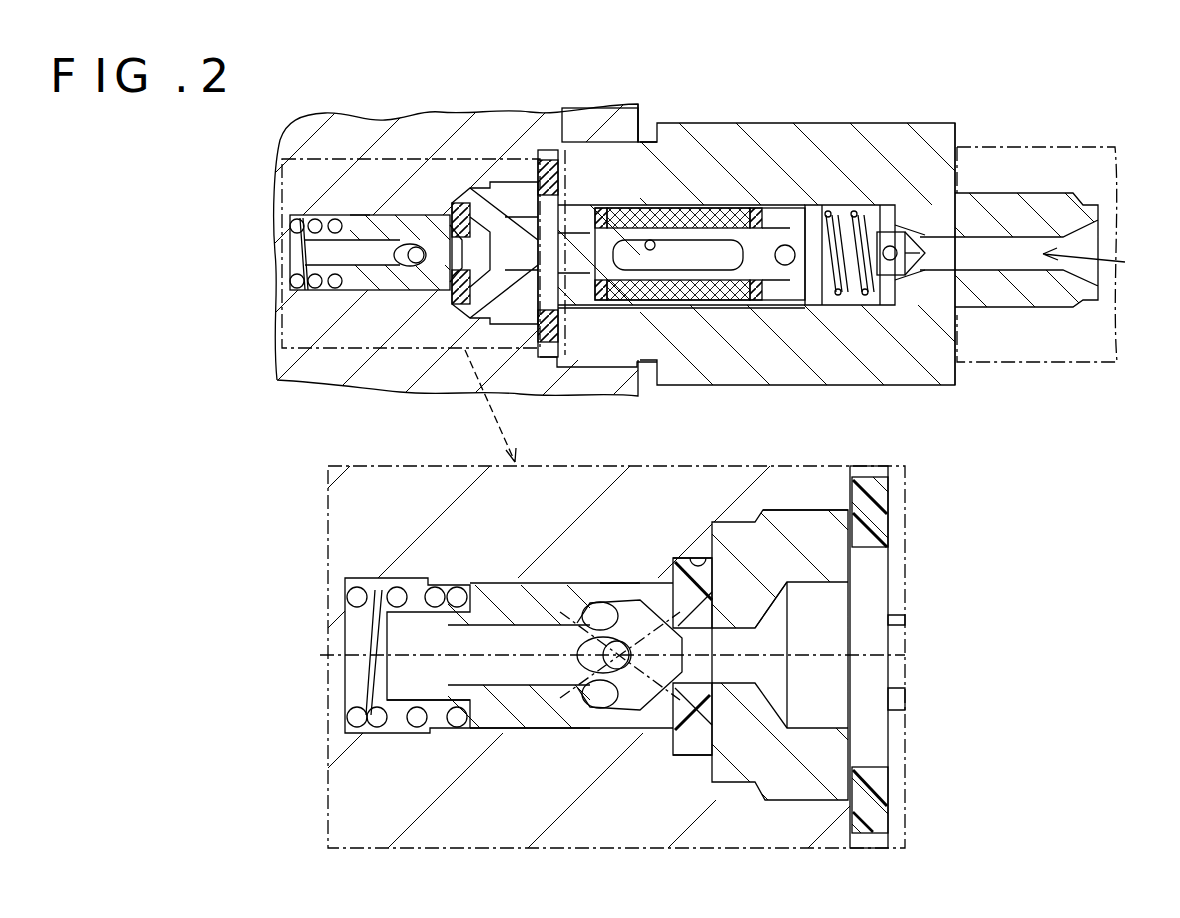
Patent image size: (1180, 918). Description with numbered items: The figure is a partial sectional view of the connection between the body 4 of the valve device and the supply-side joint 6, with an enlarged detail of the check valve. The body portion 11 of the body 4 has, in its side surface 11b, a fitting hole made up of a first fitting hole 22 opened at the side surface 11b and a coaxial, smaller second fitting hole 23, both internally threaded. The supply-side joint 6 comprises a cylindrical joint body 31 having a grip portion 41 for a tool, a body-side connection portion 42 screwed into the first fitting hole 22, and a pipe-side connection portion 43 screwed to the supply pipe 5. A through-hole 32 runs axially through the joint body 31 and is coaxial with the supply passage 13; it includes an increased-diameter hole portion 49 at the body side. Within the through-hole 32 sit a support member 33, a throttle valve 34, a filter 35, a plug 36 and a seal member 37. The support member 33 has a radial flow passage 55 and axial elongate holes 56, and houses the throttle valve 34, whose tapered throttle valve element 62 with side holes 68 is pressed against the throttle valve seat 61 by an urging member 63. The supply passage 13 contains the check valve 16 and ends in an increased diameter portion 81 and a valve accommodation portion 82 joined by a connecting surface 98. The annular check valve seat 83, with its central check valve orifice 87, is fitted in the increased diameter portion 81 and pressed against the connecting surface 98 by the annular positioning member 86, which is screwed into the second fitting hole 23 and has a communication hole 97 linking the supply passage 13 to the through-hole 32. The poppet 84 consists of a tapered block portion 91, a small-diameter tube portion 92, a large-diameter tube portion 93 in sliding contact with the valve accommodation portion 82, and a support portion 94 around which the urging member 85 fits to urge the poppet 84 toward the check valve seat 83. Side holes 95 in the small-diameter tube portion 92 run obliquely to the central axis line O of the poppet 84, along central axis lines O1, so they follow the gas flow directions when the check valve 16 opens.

The body portion 11 is at (415, 130).
The body 4 is at (456, 250).
The side surface 11b is at (640, 108).
The first fitting hole 22 is at (600, 130).
The body-side connection portion 42 is at (560, 145).
The second fitting hole 23 is at (505, 185).
The grip portion 41 is at (818, 124).
The joint body 31 is at (940, 122).
The pipe-side connection portion 43 is at (1022, 210).
The through-hole 32 is at (1102, 263).
The supply pipe 5 is at (1040, 372).
The supply-side joint 6 is at (1072, 84).
The poppet 84 is at (383, 292).
The urging member 85 is at (305, 292).
The supply passage 13 is at (285, 230).
The check valve 16 is at (361, 196).
The positioning member 86 is at (470, 310).
The plug 36 is at (580, 310).
The seal member 37 is at (545, 358).
The increased-diameter hole portion 49 is at (875, 828).
The filter 35 is at (690, 302).
The elongate holes 56 is at (646, 230).
The flow passage 55 is at (787, 242).
The support member 33 is at (815, 305).
The throttle valve 34 is at (848, 225).
The urging member 63 is at (858, 300).
The throttle valve seat 61 is at (925, 248).
The side holes 68 is at (908, 235).
The throttle valve element 62 is at (915, 272).
The increased diameter portion 81 is at (705, 555).
The check valve seat 83 is at (677, 560).
The valve accommodation portion 82 is at (625, 583).
The check valve orifice 87 is at (760, 636).
The communication hole 97 is at (770, 676).
The block portion 91 is at (700, 698).
The small-diameter tube portion 92 is at (695, 725).
The connecting surface 98 is at (690, 756).
The support portion 94 is at (437, 728).
The large-diameter tube portion 93 is at (530, 730).
The side holes 95 is at (593, 600).
The central axis line O is at (420, 650).
The central axis lines O1 is at (600, 590).